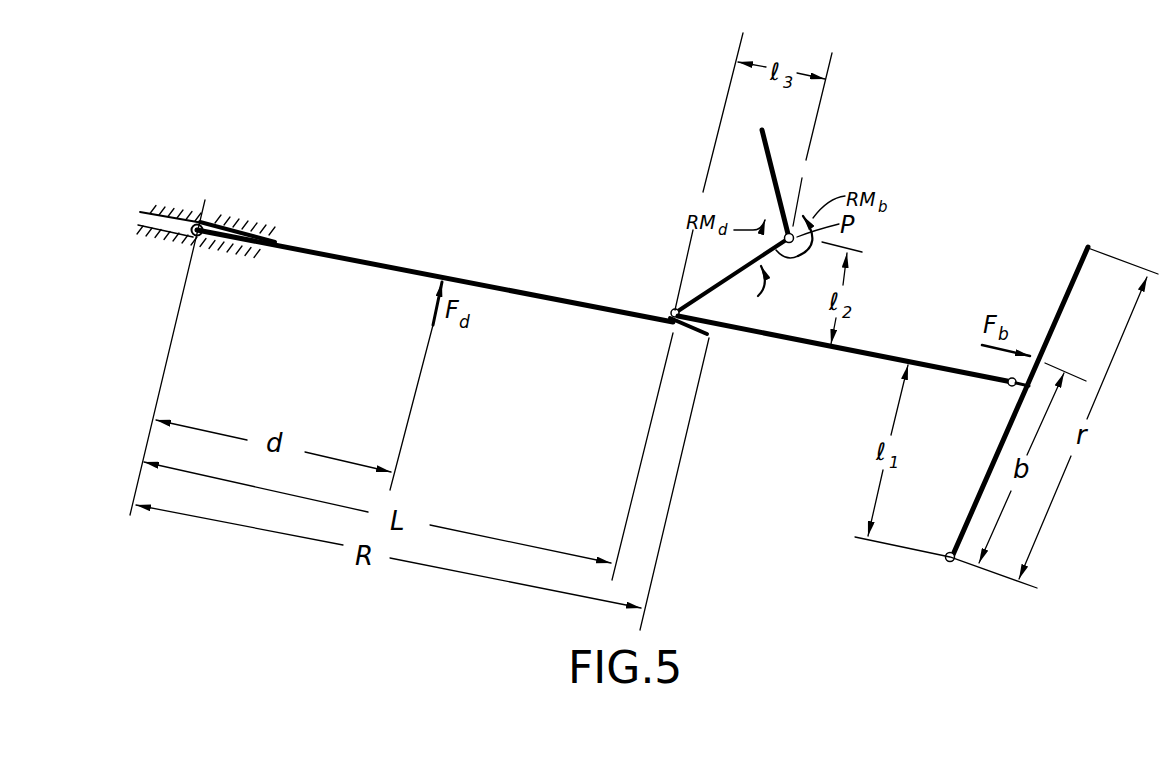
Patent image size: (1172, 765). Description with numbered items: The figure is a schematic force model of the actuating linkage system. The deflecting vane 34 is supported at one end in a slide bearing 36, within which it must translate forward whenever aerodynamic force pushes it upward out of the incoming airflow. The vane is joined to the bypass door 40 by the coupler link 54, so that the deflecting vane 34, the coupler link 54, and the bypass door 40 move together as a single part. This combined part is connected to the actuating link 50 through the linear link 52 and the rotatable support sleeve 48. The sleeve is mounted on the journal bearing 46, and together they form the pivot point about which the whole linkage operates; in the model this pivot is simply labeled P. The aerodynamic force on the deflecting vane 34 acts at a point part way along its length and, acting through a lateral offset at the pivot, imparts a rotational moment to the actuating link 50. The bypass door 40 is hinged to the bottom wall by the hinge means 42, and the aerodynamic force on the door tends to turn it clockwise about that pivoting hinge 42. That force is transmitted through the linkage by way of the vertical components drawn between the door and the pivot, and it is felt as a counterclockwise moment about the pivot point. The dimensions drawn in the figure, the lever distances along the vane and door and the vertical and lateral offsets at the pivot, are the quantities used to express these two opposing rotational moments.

The deflecting vane 34 is at (342, 257).
The slide bearing 36 is at (206, 225).
The bypass door 40 is at (1067, 294).
The hinge means 42 is at (949, 561).
The journal bearing 46 is at (791, 244).
The rotatable support sleeve 48 is at (761, 294).
The actuating link 50 is at (774, 173).
The linear link 52 is at (727, 279).
The coupler link 54 is at (836, 352).